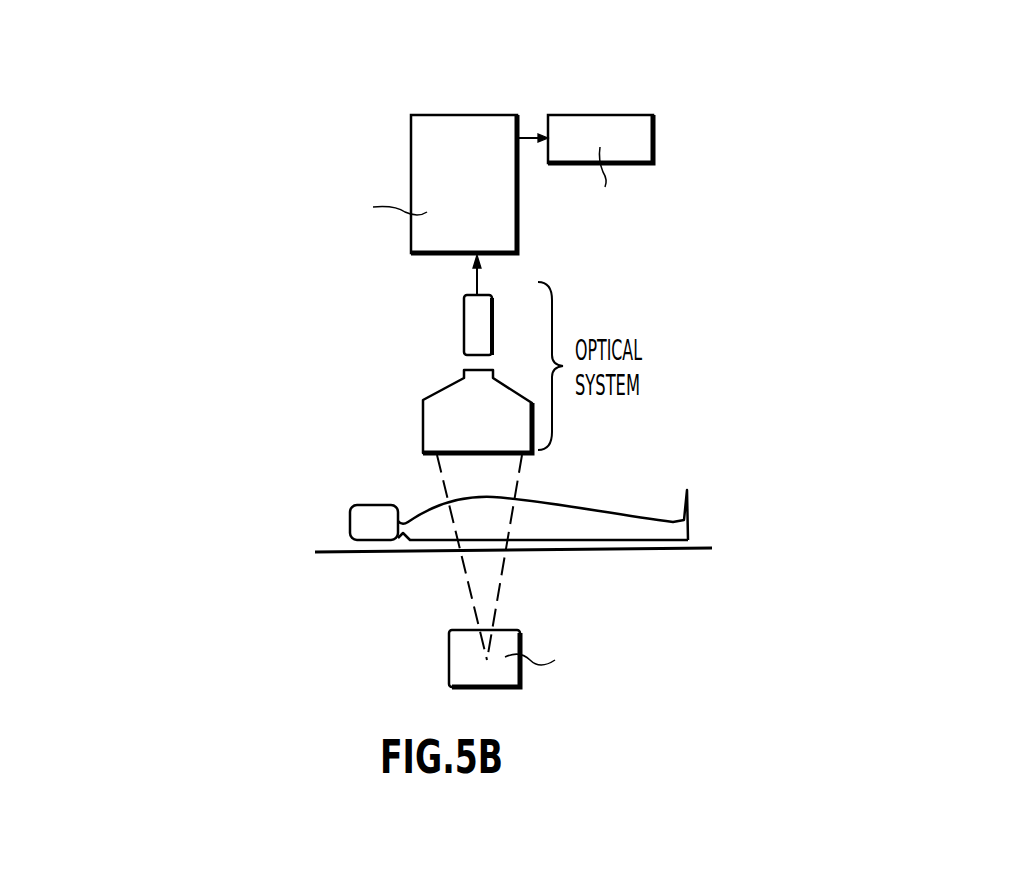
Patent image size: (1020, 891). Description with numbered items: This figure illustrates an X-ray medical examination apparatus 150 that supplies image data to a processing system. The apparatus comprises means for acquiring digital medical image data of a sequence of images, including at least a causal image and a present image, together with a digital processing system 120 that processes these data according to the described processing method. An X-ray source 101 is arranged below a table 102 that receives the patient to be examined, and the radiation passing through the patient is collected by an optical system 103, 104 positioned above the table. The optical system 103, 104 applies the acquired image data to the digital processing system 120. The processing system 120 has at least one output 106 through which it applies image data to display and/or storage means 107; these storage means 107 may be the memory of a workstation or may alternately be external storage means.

The X-ray source 101 is at (437, 661).
The table 102 is at (370, 565).
The optical system 103 is at (410, 395).
The optical system 104 is at (450, 319).
The output 106 is at (528, 112).
The storage means 107 is at (665, 148).
The digital processing system 120 is at (433, 163).
The X-ray medical examination apparatus 150 is at (292, 484).